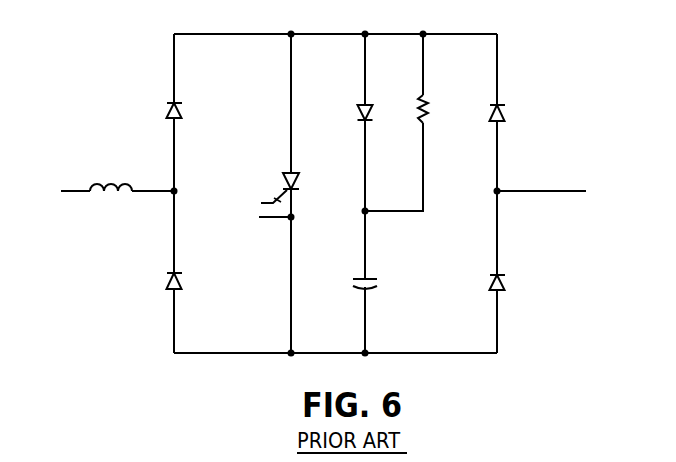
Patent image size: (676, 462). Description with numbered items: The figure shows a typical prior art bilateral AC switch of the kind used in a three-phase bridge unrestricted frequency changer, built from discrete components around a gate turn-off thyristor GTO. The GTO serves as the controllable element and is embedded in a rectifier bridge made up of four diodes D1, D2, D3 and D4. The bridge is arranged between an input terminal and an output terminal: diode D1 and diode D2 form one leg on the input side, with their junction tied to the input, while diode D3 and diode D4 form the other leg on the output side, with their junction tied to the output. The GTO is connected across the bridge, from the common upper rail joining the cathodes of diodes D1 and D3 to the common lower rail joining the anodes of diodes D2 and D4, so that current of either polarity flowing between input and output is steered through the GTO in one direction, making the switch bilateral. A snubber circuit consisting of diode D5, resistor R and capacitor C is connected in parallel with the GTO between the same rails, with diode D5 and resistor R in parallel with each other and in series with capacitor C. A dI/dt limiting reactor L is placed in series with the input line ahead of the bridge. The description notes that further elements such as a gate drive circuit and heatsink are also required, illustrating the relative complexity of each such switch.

The dI/dt limiting reactor L is at (106, 183).
The rectifier bridge diode D1 is at (182, 112).
The rectifier bridge diode D2 is at (166, 283).
The rectifier bridge diode D3 is at (505, 114).
The rectifier bridge diode D4 is at (505, 284).
The snubber diode D5 is at (357, 111).
The gate turn-off thyristor GTO is at (283, 176).
The snubber resistor R is at (428, 106).
The snubber capacitor C is at (379, 284).